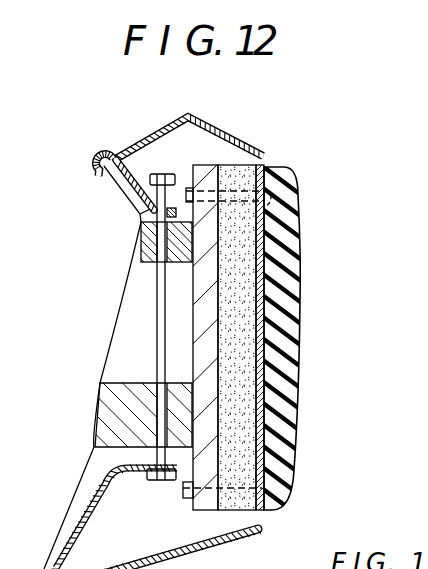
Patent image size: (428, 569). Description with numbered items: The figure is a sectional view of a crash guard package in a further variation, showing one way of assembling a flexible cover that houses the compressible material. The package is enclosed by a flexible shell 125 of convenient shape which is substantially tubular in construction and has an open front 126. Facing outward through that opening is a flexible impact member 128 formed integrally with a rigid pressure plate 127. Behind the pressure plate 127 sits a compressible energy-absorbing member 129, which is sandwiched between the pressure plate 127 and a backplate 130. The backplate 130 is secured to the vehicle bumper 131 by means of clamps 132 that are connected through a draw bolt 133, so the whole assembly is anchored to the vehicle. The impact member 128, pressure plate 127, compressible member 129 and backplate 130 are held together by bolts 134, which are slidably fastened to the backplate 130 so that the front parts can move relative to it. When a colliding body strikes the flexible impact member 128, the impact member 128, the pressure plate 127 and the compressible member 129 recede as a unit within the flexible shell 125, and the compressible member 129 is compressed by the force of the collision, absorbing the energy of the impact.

The flexible shell 125 is at (248, 133).
The open front 126 is at (186, 520).
The rigid pressure plate 127 is at (259, 277).
The flexible impact member 128 is at (286, 325).
The compressible energy-absorbing member 129 is at (239, 427).
The backplate 130 is at (208, 165).
The vehicle bumper 131 is at (112, 334).
The clamps 132 is at (88, 167).
The draw bolt 133 is at (159, 323).
The bolts 134 is at (281, 191).